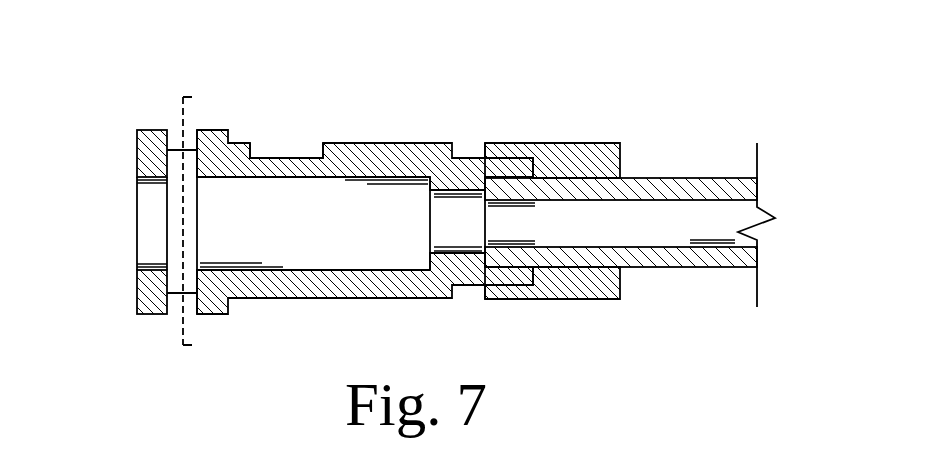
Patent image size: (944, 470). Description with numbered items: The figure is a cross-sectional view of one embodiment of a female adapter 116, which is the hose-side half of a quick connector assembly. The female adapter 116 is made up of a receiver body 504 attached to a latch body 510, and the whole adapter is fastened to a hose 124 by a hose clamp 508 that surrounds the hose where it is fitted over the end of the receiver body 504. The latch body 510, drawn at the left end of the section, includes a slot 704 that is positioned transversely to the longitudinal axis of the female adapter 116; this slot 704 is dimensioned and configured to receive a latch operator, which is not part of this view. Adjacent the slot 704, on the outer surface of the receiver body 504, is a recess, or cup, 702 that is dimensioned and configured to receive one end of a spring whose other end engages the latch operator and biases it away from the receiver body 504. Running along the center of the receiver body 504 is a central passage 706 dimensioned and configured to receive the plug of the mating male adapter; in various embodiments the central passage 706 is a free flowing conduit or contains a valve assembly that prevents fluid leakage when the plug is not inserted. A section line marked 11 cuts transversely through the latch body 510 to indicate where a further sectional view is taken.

The female adapter 116 is at (606, 97).
The hose 124 is at (678, 177).
The receiver body 504 is at (402, 143).
The hose clamp 508 is at (555, 300).
The latch body 510 is at (152, 315).
The recess 702 is at (290, 157).
The slot 704 is at (183, 193).
The central passage 706 is at (255, 233).
The section line 11- 11 is at (223, 220).